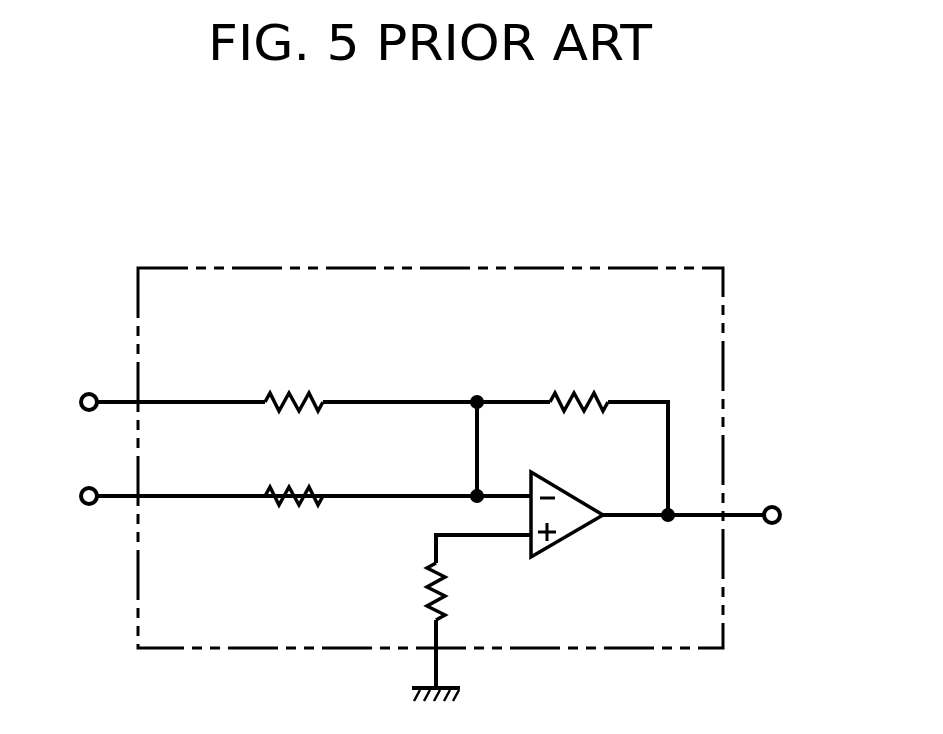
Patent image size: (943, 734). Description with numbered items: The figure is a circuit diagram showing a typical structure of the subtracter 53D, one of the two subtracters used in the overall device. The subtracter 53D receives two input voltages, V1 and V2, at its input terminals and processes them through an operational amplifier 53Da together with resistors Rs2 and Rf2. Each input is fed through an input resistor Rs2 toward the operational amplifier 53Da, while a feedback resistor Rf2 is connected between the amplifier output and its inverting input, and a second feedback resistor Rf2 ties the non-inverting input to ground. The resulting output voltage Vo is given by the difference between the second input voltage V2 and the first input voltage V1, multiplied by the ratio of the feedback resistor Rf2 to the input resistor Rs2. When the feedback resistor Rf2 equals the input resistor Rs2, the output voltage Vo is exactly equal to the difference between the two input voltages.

The subtracter 53D is at (427, 267).
The operational amplifier 53Da is at (562, 541).
The resistor Rs2 is at (289, 393).
The resistor Rf2 is at (574, 393).
The input voltage V1 is at (66, 404).
The input voltage V2 is at (66, 498).
The output voltage Vo is at (795, 515).